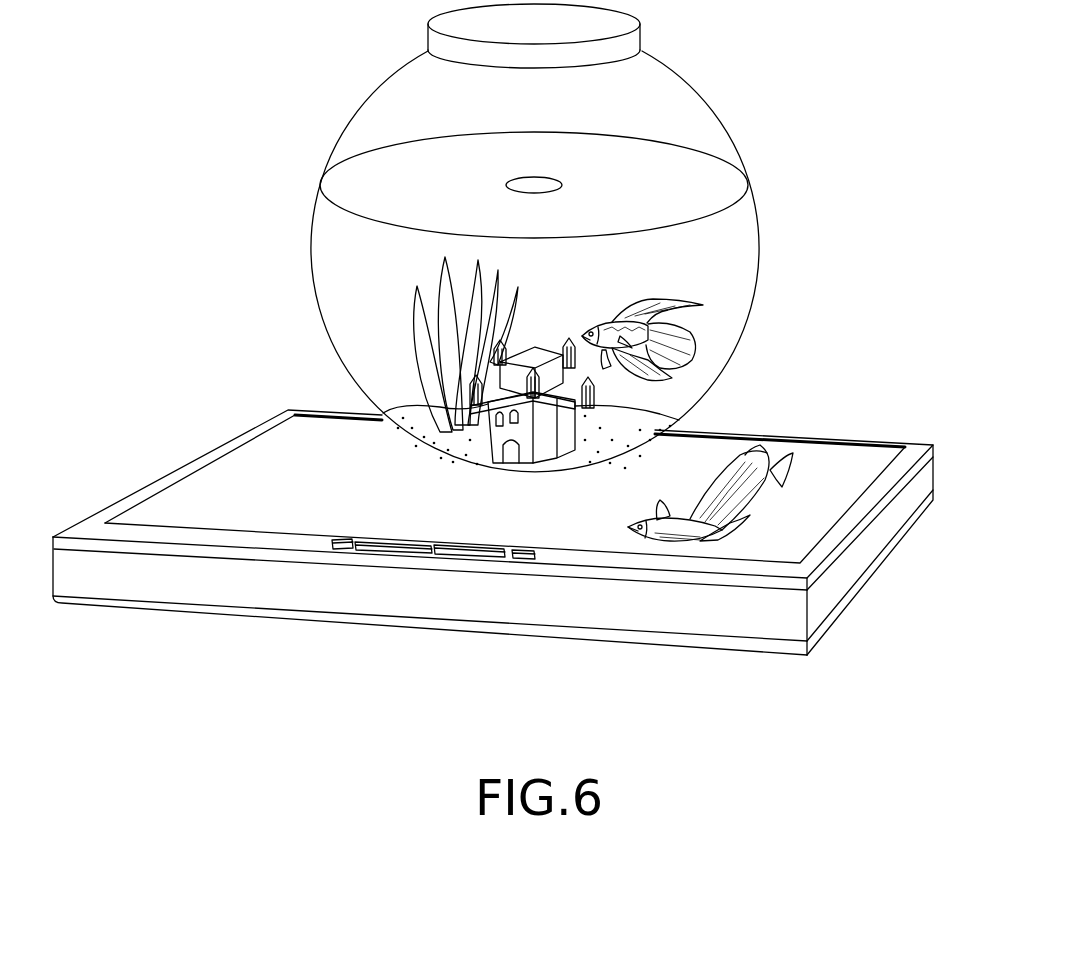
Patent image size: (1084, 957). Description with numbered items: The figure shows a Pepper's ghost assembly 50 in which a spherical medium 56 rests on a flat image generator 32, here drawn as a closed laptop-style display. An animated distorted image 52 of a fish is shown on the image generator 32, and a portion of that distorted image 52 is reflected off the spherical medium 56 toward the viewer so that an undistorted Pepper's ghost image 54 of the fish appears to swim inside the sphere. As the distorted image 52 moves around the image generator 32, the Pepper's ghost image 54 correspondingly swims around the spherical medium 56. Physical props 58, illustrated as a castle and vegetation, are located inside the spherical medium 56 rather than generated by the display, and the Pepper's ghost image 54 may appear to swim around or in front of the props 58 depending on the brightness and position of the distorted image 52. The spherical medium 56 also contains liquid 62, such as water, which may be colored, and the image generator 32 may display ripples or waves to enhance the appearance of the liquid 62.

The Pepper's ghost assembly 50 is at (508, 238).
The spherical medium 56 is at (725, 128).
The liquid 62 is at (311, 238).
The props 58 is at (413, 300).
The Pepper's ghost image 54 is at (697, 337).
The distorted image 52 is at (782, 483).
The image generator 32 is at (493, 572).